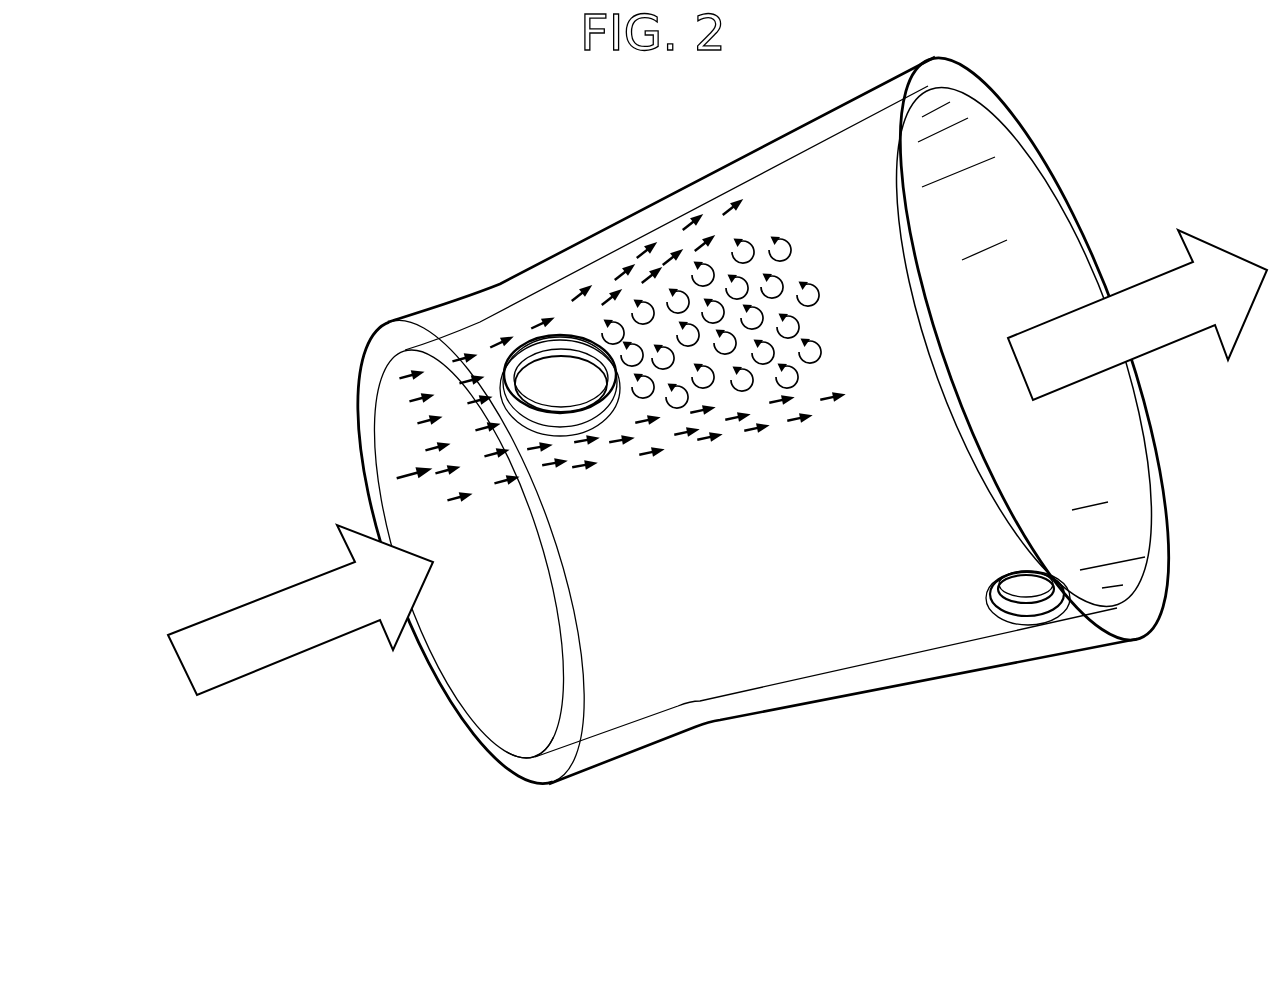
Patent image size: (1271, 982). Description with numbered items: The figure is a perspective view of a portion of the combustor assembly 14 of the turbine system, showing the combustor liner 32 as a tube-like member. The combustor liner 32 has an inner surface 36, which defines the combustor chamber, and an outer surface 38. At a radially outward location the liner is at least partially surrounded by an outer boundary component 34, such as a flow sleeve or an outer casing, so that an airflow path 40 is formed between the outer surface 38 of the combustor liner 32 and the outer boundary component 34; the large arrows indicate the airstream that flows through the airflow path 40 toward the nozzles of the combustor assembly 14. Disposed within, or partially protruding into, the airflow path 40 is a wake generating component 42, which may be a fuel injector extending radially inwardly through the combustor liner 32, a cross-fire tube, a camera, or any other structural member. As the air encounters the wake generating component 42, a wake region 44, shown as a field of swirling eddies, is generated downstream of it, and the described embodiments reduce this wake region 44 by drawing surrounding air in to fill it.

The combustor assembly 14 is at (375, 120).
The combustor liner 32 is at (400, 477).
The outer boundary component 34 is at (364, 346).
The inner surface 36 is at (522, 722).
The outer surface 38 is at (522, 756).
The airflow path 40 is at (237, 606).
The wake generating component 42 is at (530, 343).
The wake region 44 is at (672, 290).